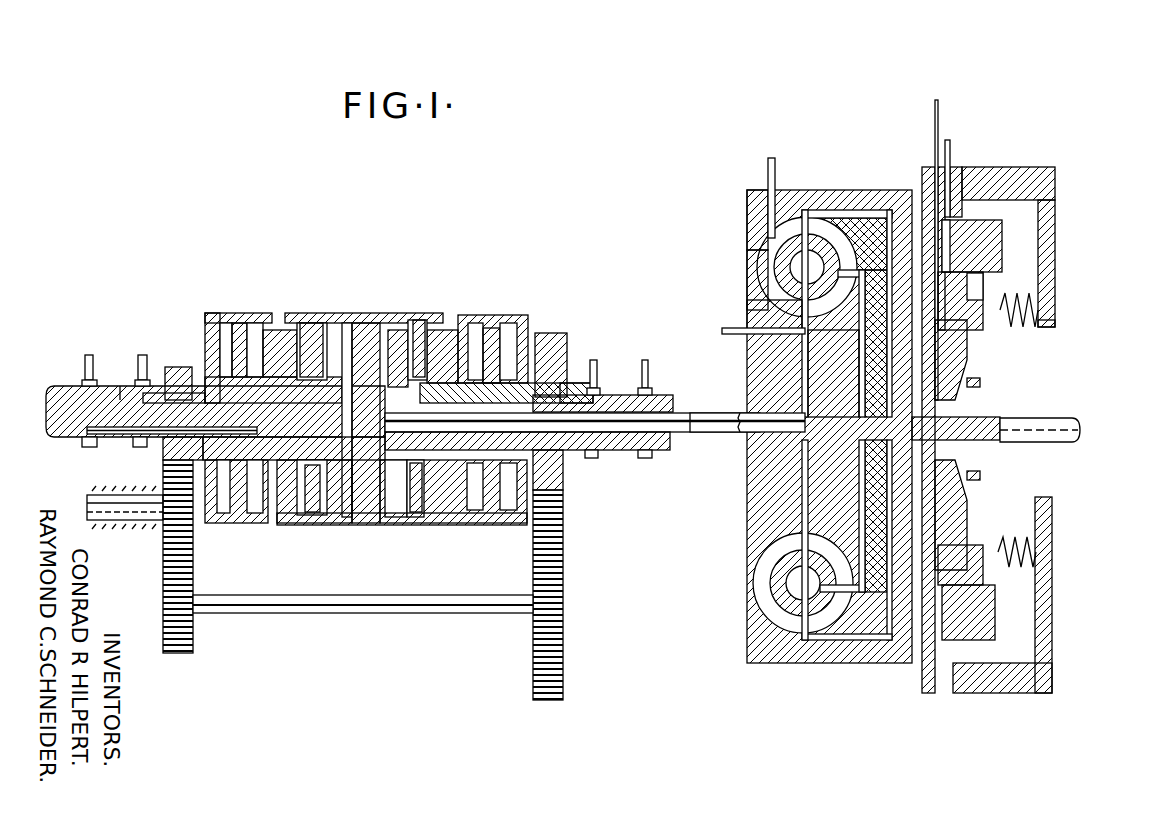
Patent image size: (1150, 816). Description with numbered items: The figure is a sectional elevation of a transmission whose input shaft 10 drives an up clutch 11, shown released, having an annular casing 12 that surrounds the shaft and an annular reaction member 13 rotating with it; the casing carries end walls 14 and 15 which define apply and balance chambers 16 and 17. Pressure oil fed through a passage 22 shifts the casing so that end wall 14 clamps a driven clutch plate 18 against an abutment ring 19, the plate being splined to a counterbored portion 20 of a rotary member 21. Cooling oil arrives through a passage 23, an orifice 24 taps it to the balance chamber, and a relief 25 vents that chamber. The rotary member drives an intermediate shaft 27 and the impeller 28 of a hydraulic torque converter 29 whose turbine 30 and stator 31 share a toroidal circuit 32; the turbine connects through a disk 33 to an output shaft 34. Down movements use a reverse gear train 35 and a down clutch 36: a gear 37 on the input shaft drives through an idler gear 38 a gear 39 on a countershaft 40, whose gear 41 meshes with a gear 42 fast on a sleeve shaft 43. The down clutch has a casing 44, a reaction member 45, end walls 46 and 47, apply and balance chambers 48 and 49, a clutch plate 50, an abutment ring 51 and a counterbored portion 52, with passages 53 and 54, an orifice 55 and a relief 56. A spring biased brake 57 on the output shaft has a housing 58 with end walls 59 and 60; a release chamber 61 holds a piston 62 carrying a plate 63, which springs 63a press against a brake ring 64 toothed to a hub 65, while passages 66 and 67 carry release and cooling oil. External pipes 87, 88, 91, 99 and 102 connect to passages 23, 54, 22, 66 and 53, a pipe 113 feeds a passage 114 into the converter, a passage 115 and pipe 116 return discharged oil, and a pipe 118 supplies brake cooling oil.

The input shaft 10 is at (50, 388).
The up clutch 11 is at (330, 300).
The annular casing 12 is at (216, 313).
The annular reaction member 13 is at (210, 318).
The annular end wall 14 is at (280, 353).
The annular end wall 15 is at (208, 330).
The apply chamber 16 is at (255, 328).
The balance chamber 17 is at (222, 345).
The driven clutch plate 18 is at (322, 310).
The abutment ring 19 is at (347, 330).
The counterbored portion 20 is at (308, 316).
The rotary member 21 is at (370, 330).
The passage 22 is at (78, 434).
The passage 23 is at (120, 387).
The orifice 24 is at (232, 392).
The relief 25 is at (204, 372).
The intermediate shaft 27 is at (700, 413).
The impeller 28 is at (822, 318).
The hydraulic torque converter 29 is at (818, 185).
The turbine 30 is at (838, 215).
The stator 31 is at (747, 240).
The toroidal circuit 32 is at (758, 262).
The disk 33 is at (847, 380).
The output shaft 34 is at (1040, 418).
The reverse gear train 35 is at (328, 618).
The down clutch 36 is at (440, 300).
The gear 37 is at (163, 452).
The idler gear 38 is at (98, 538).
The gear 39 is at (182, 653).
The countershaft 40 is at (420, 614).
The gear 41 is at (533, 655).
The gear 42 is at (575, 472).
The sleeve shaft 43 is at (655, 455).
The annular casing 44 is at (500, 315).
The annular reaction member 45 is at (510, 340).
The annular end wall 46 is at (424, 358).
The annular end wall 47 is at (560, 340).
The apply chamber 48 is at (475, 328).
The balance chamber 49 is at (530, 338).
The driven clutch plate 50 is at (418, 514).
The abutment ring 51 is at (393, 515).
The counterbored portion 52 is at (448, 527).
The passage 53 is at (622, 458).
The passage 54 is at (600, 400).
The orifice 55 is at (506, 393).
The relief 56 is at (562, 382).
The spring biased brake 57 is at (992, 158).
The annular housing 58 is at (1010, 168).
The annular end wall 59 is at (926, 180).
The annular end wall 60 is at (1055, 242).
The release chamber 61 is at (950, 240).
The annular piston 62 is at (985, 262).
The annular plate 63 is at (978, 342).
The springs 63a is at (1056, 327).
The brake ring 64 is at (980, 383).
The annular hub 65 is at (978, 466).
The passage 66 is at (955, 185).
The passage 67 is at (935, 188).
The pipe 87 is at (142, 355).
The pipe 88 is at (594, 362).
The pipe 91 is at (87, 356).
The pipe 99 is at (948, 150).
The pipe 102 is at (648, 362).
The pipe 113 is at (722, 328).
The passage 114 is at (760, 312).
The passage 115 is at (747, 200).
The pipe 116 is at (768, 163).
The pipe 118 is at (936, 130).